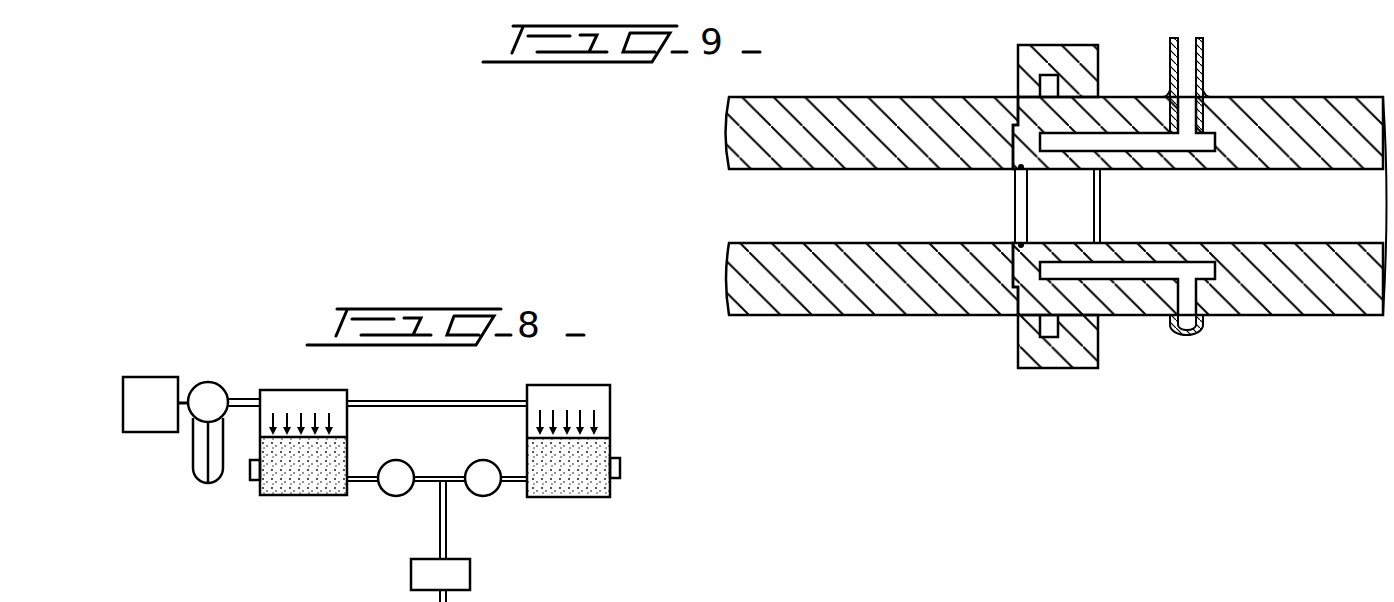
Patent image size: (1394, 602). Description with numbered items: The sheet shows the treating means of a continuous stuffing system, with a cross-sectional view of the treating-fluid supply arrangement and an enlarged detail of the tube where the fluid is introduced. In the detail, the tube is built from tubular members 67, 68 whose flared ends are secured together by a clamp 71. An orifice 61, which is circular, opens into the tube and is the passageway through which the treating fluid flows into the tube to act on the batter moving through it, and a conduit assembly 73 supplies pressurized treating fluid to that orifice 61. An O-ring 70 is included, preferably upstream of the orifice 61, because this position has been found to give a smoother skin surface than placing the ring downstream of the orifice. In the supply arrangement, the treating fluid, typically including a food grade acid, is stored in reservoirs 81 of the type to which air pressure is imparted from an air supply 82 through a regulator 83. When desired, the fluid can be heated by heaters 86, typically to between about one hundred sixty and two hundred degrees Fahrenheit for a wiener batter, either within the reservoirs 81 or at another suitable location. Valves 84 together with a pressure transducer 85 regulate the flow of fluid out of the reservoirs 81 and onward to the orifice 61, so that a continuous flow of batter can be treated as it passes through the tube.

In FIG. 9, the orifice 61 is at (1101, 217).
In FIG. 9, the tubular member 67 is at (855, 96).
In FIG. 9, the tubular member 68 is at (1318, 97).
In FIG. 9, the O-ring 70 is at (1015, 204).
In FIG. 9, the clamp 71 is at (1018, 68).
In FIG. 9, the conduit assembly 73 is at (1205, 75).
In FIG. 8, the reservoir 81 is at (291, 479).
In FIG. 8, the air supply 82 is at (135, 416).
In FIG. 8, the regulator 83 is at (222, 394).
In FIG. 8, the valve 84 is at (389, 496).
In FIG. 8, the pressure transducer 85 is at (426, 588).
In FIG. 8, the heater 86 is at (250, 478).